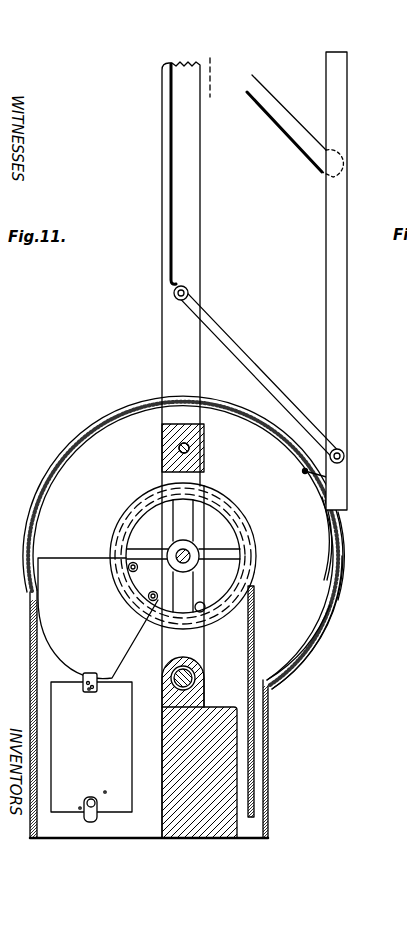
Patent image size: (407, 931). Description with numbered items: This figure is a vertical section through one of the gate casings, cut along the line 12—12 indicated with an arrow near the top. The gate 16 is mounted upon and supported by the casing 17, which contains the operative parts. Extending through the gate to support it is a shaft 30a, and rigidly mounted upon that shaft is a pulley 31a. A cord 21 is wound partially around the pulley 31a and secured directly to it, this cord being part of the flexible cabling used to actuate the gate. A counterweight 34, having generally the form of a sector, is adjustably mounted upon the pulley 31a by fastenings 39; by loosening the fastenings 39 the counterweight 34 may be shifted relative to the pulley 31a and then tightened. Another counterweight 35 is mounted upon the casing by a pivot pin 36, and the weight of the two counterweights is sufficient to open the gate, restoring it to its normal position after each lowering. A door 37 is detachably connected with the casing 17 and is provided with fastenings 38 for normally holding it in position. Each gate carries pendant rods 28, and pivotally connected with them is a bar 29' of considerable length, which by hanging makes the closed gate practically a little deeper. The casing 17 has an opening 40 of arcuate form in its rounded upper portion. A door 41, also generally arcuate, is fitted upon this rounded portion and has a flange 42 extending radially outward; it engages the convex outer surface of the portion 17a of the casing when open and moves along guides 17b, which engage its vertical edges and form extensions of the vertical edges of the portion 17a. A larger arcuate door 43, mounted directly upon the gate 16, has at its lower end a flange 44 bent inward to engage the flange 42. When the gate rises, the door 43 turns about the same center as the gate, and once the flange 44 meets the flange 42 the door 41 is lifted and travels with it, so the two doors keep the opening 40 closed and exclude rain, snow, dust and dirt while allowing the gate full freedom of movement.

The section line 12 is at (235, 82).
The gate 16 is at (181, 157).
The pendant rods 28 is at (264, 103).
The bar 29' is at (316, 281).
The door 43 is at (115, 416).
The opening 40 is at (251, 420).
The flange 42 is at (302, 470).
The flange 44 is at (306, 471).
The pulley 31a is at (247, 519).
The fastenings 39 is at (134, 562).
The shaft 30a is at (188, 554).
The guides 17b is at (329, 540).
The door 41 is at (341, 546).
The counterweight 34 is at (98, 618).
The cord 21 is at (256, 615).
The portion of the casing 17a is at (312, 636).
The casing 17 is at (30, 645).
The fastenings 38 is at (82, 675).
The pivot pin 36 is at (206, 681).
The door 37 is at (91, 747).
The counterweight 35 is at (183, 758).